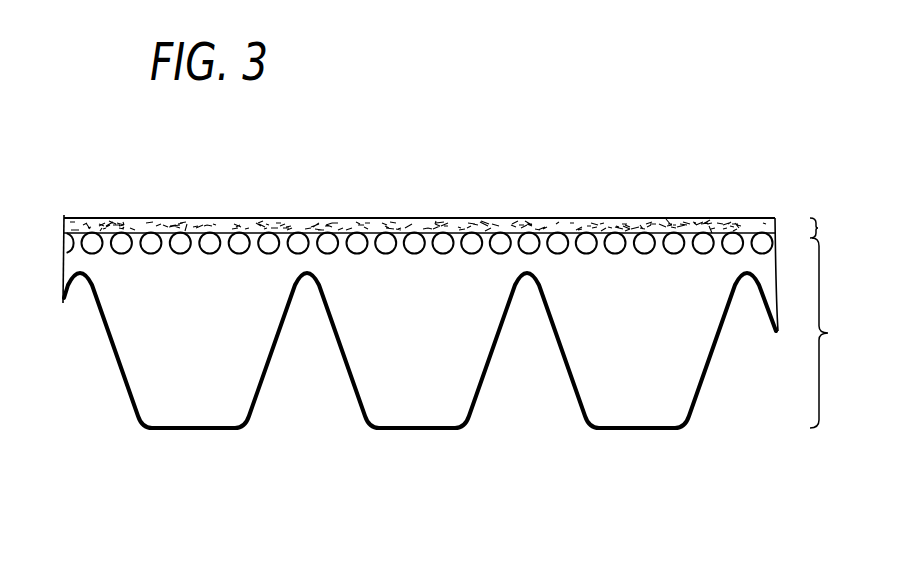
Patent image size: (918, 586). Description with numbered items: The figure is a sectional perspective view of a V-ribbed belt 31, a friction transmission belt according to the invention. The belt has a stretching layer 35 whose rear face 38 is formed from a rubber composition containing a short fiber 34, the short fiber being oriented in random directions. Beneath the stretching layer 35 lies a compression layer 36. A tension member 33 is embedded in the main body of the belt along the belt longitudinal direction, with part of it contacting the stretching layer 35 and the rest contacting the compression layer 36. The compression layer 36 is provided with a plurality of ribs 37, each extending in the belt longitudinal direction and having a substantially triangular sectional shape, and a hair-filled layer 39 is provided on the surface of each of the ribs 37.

The V-ribbed belt 31 is at (396, 198).
The tension member 33 is at (739, 238).
The short fiber 34 is at (532, 223).
The stretching layer 35 is at (828, 228).
The compression layer 36 is at (834, 333).
The rib 37 is at (638, 430).
The rear face 38 is at (682, 218).
The hair-filled layer 39 is at (82, 339).